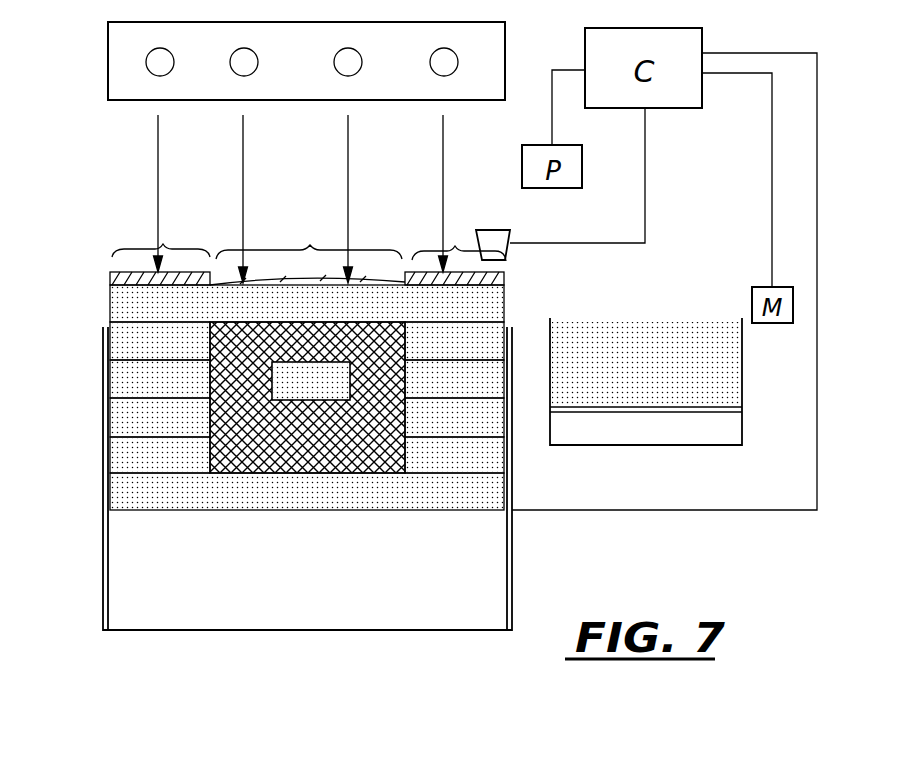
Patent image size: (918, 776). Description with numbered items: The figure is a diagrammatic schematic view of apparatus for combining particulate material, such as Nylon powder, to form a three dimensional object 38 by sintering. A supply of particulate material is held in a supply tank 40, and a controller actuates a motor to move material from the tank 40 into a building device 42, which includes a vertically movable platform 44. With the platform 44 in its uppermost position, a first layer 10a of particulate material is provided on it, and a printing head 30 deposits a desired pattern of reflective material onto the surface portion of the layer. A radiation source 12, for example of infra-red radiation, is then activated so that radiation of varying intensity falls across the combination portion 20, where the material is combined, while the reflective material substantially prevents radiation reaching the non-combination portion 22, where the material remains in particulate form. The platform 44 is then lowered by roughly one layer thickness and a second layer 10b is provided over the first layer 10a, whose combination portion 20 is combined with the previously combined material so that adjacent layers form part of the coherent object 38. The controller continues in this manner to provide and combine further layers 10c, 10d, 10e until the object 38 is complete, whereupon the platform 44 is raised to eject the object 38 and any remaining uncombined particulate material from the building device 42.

The radiation source 12 is at (118, 79).
The combination portion 20 is at (308, 245).
The non-combination portion 22 is at (165, 245).
The printing head 30 is at (494, 236).
The three dimensional object 38 is at (230, 452).
The supply tank 40 is at (760, 416).
The building device 42 is at (168, 644).
The vertically movable platform 44 is at (352, 493).
The first layer 10a is at (120, 459).
The second layer 10b is at (120, 424).
The further layer 10c is at (120, 387).
The further layer 10d is at (120, 345).
The further layer 10e is at (120, 303).